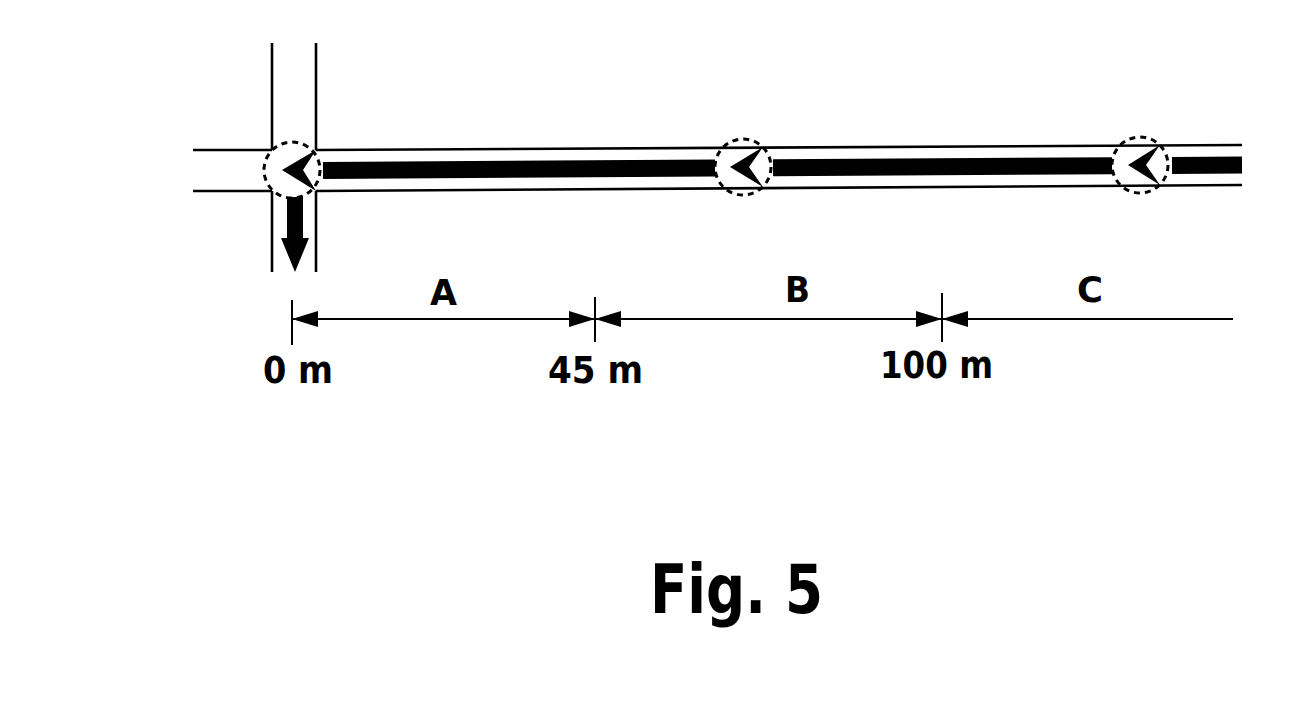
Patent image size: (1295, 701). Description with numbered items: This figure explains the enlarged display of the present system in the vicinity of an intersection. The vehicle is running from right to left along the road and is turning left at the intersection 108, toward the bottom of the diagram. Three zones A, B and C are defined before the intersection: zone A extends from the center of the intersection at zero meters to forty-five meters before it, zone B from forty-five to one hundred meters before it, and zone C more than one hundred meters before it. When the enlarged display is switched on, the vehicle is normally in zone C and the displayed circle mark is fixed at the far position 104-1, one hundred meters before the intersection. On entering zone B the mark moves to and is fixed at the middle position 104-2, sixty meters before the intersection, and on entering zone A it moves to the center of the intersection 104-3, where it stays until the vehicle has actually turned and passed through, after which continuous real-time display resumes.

The intersection 108 is at (258, 135).
The circle mark position in far zone 104-1 is at (1147, 137).
The circle mark position in middle zone 104-2 is at (743, 139).
The circle mark position at intersection center 104-3 is at (312, 140).